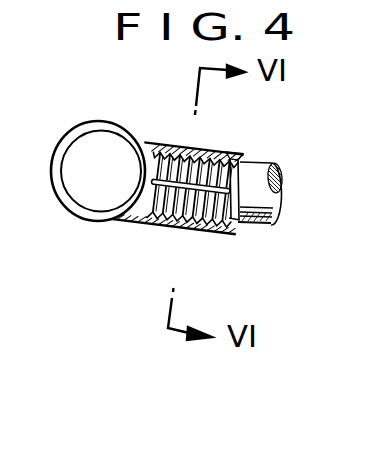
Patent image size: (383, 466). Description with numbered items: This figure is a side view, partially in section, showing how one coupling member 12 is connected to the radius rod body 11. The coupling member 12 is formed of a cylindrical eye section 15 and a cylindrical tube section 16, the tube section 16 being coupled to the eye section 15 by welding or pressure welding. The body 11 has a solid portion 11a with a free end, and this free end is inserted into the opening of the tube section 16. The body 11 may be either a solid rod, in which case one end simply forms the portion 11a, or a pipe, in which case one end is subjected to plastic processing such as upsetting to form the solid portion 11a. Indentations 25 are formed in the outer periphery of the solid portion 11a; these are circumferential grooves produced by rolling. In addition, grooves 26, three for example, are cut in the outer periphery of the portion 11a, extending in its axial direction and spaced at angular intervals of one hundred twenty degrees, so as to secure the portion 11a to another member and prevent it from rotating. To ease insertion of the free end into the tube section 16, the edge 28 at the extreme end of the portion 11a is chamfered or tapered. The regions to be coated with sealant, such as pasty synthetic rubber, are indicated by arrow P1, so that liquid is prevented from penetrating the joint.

The radius rod body 11 is at (264, 163).
The solid portion 11a is at (253, 229).
The coupling member 12 is at (121, 120).
The cylindrical eye section 15 is at (53, 186).
The cylindrical tube section 16 is at (207, 232).
The indentations 25 is at (163, 218).
The grooves 26 is at (208, 185).
The edge 28 is at (136, 219).
The arrow P1 is at (227, 234).